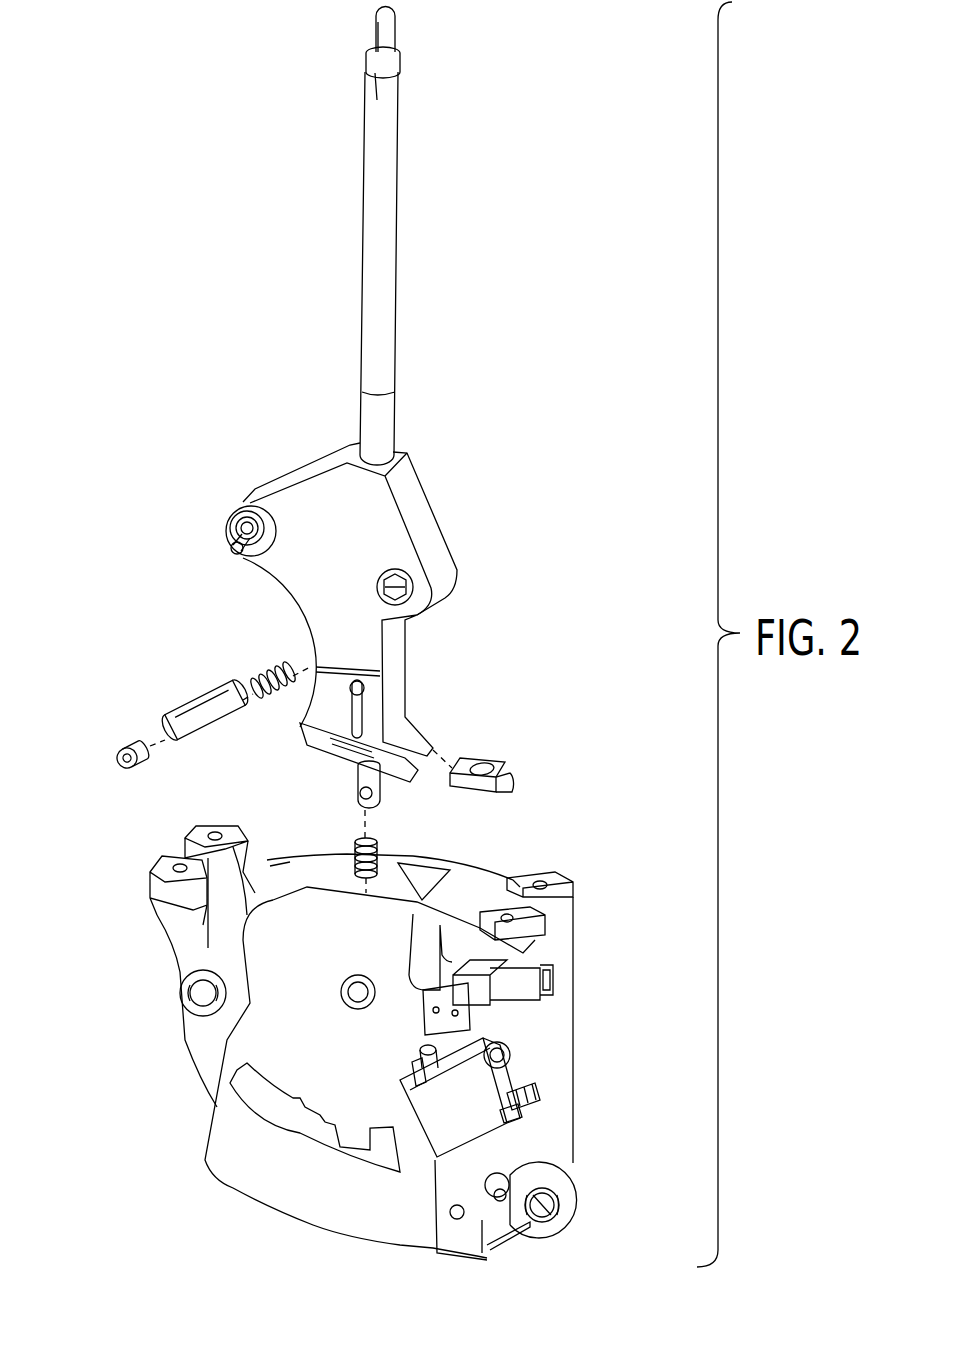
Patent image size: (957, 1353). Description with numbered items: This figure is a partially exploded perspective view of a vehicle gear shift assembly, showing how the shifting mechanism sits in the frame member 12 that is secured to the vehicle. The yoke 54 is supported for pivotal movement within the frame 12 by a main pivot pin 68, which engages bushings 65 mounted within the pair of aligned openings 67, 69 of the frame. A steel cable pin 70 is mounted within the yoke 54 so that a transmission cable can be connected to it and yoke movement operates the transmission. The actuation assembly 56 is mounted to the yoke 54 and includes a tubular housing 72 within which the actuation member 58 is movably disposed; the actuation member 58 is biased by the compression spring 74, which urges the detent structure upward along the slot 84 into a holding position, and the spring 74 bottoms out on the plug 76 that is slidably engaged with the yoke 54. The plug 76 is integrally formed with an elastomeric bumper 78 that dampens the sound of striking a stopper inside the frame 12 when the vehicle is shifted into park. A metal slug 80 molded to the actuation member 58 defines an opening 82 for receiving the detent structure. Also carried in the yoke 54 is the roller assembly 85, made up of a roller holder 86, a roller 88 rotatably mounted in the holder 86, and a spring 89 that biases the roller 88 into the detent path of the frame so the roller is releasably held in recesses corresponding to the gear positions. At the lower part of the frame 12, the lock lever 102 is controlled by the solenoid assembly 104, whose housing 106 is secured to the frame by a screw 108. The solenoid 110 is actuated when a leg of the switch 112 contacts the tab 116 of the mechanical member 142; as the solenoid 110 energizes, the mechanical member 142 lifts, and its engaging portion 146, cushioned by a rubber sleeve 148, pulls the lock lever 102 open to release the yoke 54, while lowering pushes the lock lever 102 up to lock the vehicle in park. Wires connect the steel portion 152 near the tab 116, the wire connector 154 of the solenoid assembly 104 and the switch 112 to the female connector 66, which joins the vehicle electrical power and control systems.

The frame member 12 is at (505, 878).
The yoke 54 is at (424, 486).
The actuation assembly 56 is at (326, 212).
The actuation member 58 is at (397, 28).
The bushings 65 is at (345, 992).
The female connector 66 is at (555, 975).
The opening 67 is at (305, 1118).
The main pivot pin 68 is at (357, 982).
The opening 69 is at (493, 1049).
The cable pin 70 is at (232, 546).
The tubular housing 72 is at (398, 238).
The compression spring 74 is at (385, 850).
The plug 76 is at (478, 758).
The bumper 78 is at (518, 778).
The metal slug 80 is at (356, 785).
The opening 82 is at (360, 797).
The slot 84 is at (347, 707).
The roller assembly 85 is at (186, 686).
The roller holder 86 is at (205, 697).
The roller 88 is at (118, 752).
The spring 89 is at (263, 665).
The lock lever 102 is at (497, 1200).
The solenoid assembly 104 is at (547, 1074).
The housing 106 is at (435, 1167).
The screw 108 is at (510, 1052).
The solenoid 110 is at (490, 1098).
The switch 112 is at (425, 1005).
The tab 116 is at (420, 1052).
The mechanical member 142 is at (513, 1143).
The engaging portion 146 is at (520, 1180).
The rubber sleeve 148 is at (560, 1216).
The steel portion 152 is at (412, 1070).
The wire connector 154 is at (530, 1113).